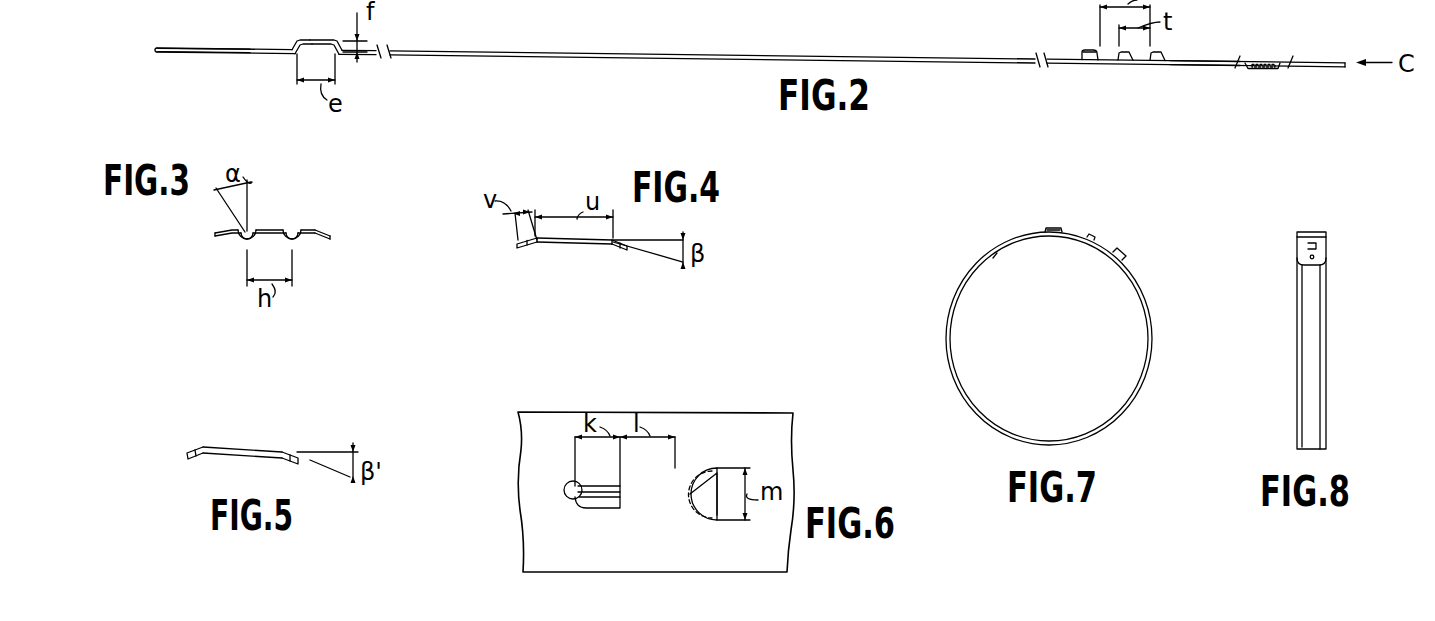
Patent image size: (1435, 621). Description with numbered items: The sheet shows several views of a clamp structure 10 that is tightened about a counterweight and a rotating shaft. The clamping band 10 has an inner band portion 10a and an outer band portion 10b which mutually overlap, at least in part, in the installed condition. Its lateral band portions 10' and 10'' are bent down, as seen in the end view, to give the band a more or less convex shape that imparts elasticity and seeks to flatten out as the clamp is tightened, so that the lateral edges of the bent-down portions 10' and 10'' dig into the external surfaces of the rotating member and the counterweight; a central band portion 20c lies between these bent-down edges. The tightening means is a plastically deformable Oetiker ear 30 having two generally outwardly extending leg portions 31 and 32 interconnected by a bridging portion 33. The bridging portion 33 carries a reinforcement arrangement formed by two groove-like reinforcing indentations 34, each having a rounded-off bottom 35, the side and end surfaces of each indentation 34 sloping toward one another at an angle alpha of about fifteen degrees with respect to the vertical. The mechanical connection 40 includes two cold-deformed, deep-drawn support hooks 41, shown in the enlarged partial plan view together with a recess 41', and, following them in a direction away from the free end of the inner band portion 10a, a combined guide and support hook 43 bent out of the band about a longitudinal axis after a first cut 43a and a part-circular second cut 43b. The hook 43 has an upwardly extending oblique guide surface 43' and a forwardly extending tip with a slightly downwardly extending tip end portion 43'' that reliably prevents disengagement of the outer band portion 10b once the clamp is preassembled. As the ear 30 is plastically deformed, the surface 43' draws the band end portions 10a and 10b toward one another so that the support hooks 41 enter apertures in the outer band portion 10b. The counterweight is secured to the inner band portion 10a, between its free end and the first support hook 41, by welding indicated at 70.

In FIG. 2, the clamp structure 10 is at (750, 39).
In FIG. 7, the clamp structure 10 is at (1068, 338).
In FIG. 8, the clamp structure 10 is at (1345, 340).
In FIG. 2, the inner band portion 10a is at (1202, 60).
In FIG. 2, the outer band portion 10b is at (250, 47).
In FIG. 8, the outer band portion 10b is at (1322, 250).
In FIG. 4, the lateral band portion 10' is at (513, 265).
In FIG. 5, the lateral band portion 10' is at (191, 427).
In FIG. 4, the lateral band portion 10'' is at (630, 265).
In FIG. 5, the lateral band portion 10'' is at (304, 429).
In FIG. 4, the central band portion 20c is at (570, 246).
In FIG. 7, the ear 30 is at (1073, 190).
In FIG. 2, the leg portion 31 is at (292, 42).
In FIG. 2, the leg portion 32 is at (344, 40).
In FIG. 3, the bridging portion 33 is at (262, 246).
In FIG. 3, the groove-like reinforcing indentation 34 is at (248, 229).
In FIG. 3, the rounded-off bottom 35 is at (233, 250).
In FIG. 7, the mechanical connection 40 is at (1106, 229).
In FIG. 2, the support hook 41 is at (1141, 84).
In FIG. 6, the support hook 41 is at (710, 515).
In FIG. 6, the opening recess 41' is at (684, 517).
In FIG. 6, the guide and support hook 43 is at (612, 519).
In FIG. 6, the first cut 43a is at (593, 512).
In FIG. 6, the second cut 43b is at (567, 481).
In FIG. 2, the oblique guide surface 43' is at (1070, 83).
In FIG. 2, the tip end portion 43'' is at (1059, 32).
In FIG. 2, the welding 70 is at (1267, 70).